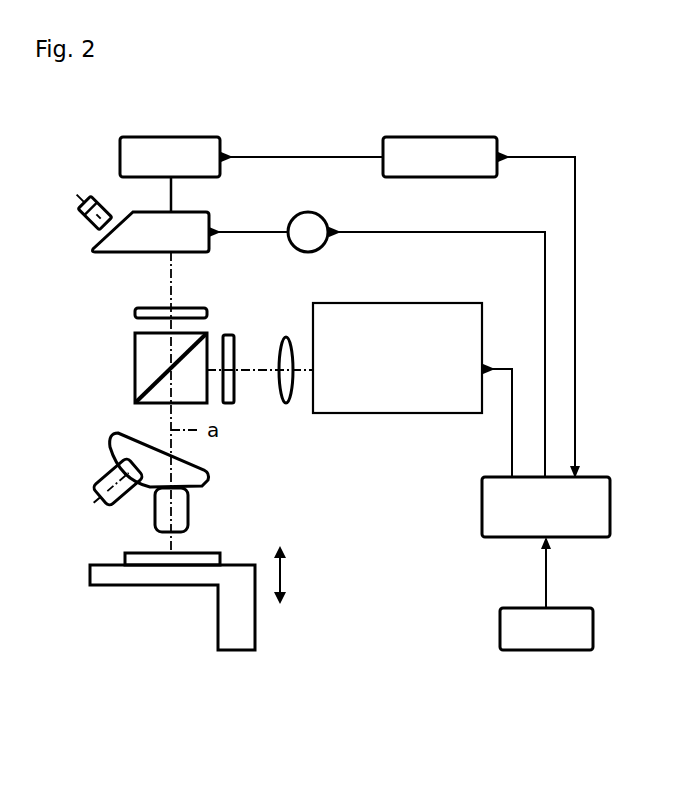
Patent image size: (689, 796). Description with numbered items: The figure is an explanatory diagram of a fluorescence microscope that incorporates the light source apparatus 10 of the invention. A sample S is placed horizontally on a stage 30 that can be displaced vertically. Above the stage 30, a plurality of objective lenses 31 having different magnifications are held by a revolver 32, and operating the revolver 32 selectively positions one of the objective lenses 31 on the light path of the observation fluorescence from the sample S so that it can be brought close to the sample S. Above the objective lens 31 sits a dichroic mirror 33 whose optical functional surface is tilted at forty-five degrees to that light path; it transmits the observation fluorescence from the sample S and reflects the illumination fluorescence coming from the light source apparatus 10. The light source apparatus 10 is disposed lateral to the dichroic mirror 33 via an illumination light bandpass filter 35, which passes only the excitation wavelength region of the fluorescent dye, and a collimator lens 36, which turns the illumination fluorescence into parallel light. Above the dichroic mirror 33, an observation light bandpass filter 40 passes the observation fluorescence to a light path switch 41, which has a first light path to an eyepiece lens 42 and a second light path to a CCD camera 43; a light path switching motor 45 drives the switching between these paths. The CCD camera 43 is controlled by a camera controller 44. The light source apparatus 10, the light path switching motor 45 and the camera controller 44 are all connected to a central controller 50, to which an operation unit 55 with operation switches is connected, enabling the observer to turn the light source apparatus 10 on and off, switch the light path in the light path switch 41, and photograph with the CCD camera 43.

The light source apparatus 10 is at (357, 415).
The stage 30 is at (218, 615).
The objective lenses 31 is at (104, 472).
The revolver 32 is at (117, 433).
The dichroic mirror 33 is at (135, 368).
The illumination light bandpass filter 35 is at (230, 333).
The collimator lens 36 is at (287, 336).
The observation light bandpass filter 40 is at (148, 306).
The light path switch 41 is at (210, 216).
The eyepiece lens 42 is at (87, 232).
The CCD camera 43 is at (196, 135).
The camera controller 44 is at (455, 135).
The light path switching motor 45 is at (309, 211).
The central controller 50 is at (596, 476).
The operation unit 55 is at (576, 606).
The sample S is at (207, 552).